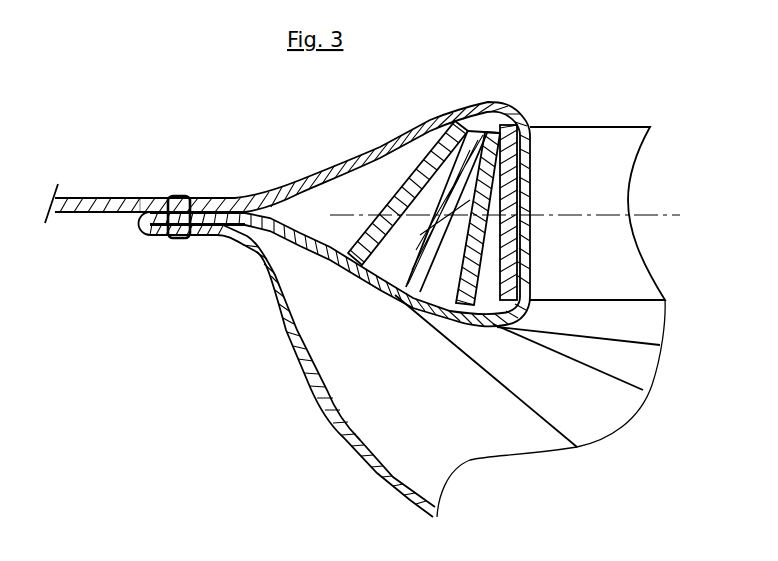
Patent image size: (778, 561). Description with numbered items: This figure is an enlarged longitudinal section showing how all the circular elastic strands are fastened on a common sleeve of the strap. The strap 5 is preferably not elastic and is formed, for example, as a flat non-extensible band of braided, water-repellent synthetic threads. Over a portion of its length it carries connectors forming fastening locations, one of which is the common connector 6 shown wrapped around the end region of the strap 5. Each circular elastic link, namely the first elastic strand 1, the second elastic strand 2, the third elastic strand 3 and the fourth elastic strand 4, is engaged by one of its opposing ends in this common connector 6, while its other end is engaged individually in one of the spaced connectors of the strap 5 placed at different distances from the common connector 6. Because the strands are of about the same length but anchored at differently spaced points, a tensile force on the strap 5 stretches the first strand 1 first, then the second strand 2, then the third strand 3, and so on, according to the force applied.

The first elastic strand 1 is at (530, 125).
The second elastic strand 2 is at (492, 165).
The third elastic strand 3 is at (450, 205).
The fourth elastic strand 4 is at (397, 198).
The strap 5 is at (132, 207).
The common connector 6 is at (443, 113).